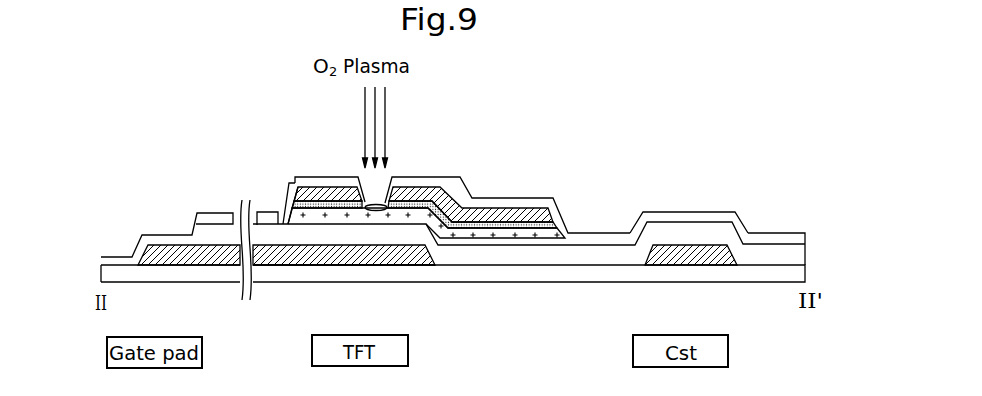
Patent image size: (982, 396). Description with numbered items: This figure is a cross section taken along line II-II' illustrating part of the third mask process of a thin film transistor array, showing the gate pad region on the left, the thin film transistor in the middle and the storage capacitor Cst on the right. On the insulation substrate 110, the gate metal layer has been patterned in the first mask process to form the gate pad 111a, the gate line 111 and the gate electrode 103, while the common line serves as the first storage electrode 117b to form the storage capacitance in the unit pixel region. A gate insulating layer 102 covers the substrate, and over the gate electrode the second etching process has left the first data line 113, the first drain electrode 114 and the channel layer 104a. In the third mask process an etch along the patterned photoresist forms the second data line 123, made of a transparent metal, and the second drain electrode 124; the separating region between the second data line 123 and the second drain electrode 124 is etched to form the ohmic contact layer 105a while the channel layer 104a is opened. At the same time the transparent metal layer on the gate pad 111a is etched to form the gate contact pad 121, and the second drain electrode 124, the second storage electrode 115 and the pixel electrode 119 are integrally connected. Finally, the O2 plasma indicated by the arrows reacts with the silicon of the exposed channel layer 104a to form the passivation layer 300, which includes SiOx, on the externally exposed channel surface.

The insulation substrate 110 is at (767, 253).
The gate pad 111a is at (206, 267).
The gate line 111 is at (290, 266).
The gate electrode 103 is at (406, 262).
The first storage electrode 117b is at (700, 258).
The gate contact pad 121 is at (182, 238).
The gate insulating layer 102 is at (543, 255).
The channel layer 104a is at (497, 235).
The ohmic contact layer 105a is at (540, 199).
The first data line 113 is at (304, 184).
The second data line 123 is at (337, 178).
The passivation layer 300 is at (377, 211).
The first drain electrode 114 is at (414, 180).
The second drain electrode 124 is at (450, 178).
The second storage electrode 115 is at (642, 212).
The pixel electrode 119 is at (771, 240).